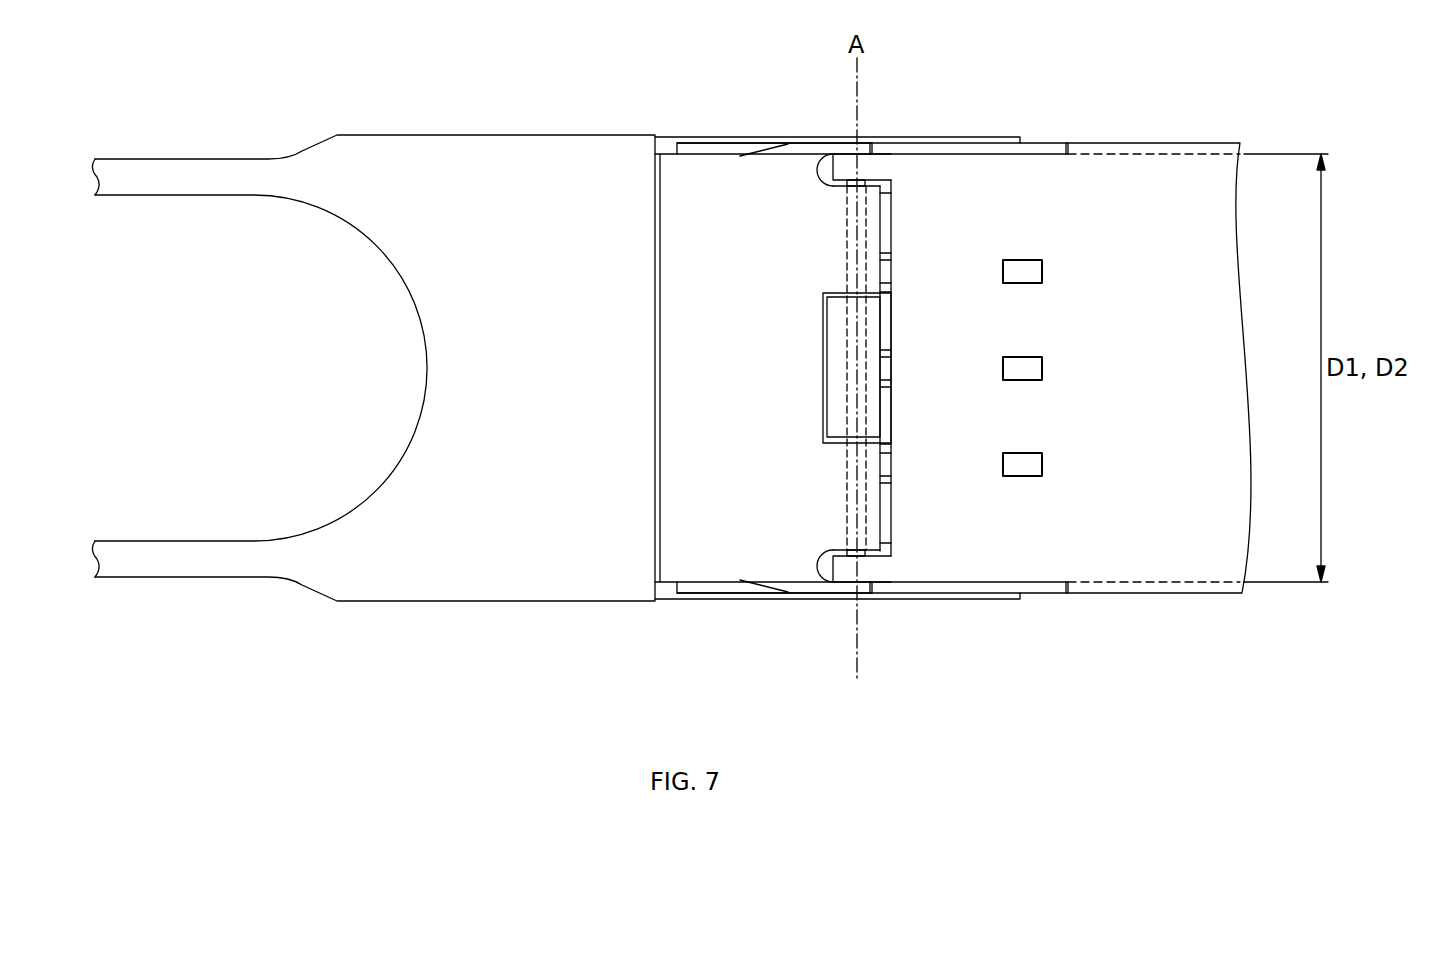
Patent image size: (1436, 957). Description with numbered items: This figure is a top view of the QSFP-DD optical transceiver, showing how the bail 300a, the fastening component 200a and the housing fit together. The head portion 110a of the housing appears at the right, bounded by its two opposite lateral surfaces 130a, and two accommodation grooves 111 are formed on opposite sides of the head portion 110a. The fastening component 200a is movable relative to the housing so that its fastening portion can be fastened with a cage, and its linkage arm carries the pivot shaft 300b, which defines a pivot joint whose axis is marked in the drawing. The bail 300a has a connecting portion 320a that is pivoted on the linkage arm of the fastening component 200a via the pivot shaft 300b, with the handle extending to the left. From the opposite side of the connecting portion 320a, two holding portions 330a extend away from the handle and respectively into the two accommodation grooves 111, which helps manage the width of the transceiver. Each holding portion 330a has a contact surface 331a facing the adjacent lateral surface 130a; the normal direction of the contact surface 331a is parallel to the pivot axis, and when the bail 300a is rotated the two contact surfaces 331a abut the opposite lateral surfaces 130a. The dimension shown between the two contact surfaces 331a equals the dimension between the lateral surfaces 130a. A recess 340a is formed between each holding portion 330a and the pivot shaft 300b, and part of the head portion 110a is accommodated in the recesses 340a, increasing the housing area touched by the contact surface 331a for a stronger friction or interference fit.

The bail 300a is at (537, 112).
The connecting portion 320a is at (713, 180).
The fastening component 200a is at (733, 583).
The recess 340a is at (818, 170).
The holding portion 330a is at (847, 150).
The contact surface 331a is at (862, 154).
The pivot shaft 300b is at (845, 498).
The lateral surface 130a is at (990, 154).
The accommodation groove 111 is at (1038, 140).
The head portion 110a is at (1167, 198).